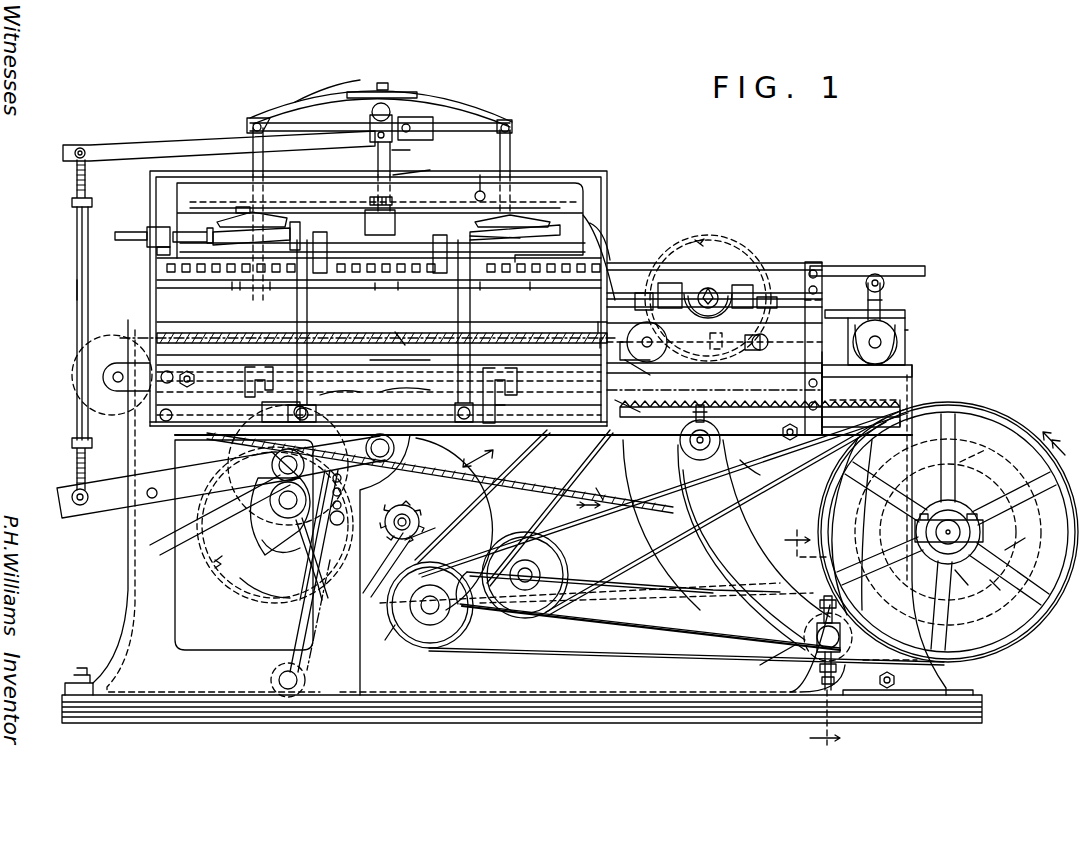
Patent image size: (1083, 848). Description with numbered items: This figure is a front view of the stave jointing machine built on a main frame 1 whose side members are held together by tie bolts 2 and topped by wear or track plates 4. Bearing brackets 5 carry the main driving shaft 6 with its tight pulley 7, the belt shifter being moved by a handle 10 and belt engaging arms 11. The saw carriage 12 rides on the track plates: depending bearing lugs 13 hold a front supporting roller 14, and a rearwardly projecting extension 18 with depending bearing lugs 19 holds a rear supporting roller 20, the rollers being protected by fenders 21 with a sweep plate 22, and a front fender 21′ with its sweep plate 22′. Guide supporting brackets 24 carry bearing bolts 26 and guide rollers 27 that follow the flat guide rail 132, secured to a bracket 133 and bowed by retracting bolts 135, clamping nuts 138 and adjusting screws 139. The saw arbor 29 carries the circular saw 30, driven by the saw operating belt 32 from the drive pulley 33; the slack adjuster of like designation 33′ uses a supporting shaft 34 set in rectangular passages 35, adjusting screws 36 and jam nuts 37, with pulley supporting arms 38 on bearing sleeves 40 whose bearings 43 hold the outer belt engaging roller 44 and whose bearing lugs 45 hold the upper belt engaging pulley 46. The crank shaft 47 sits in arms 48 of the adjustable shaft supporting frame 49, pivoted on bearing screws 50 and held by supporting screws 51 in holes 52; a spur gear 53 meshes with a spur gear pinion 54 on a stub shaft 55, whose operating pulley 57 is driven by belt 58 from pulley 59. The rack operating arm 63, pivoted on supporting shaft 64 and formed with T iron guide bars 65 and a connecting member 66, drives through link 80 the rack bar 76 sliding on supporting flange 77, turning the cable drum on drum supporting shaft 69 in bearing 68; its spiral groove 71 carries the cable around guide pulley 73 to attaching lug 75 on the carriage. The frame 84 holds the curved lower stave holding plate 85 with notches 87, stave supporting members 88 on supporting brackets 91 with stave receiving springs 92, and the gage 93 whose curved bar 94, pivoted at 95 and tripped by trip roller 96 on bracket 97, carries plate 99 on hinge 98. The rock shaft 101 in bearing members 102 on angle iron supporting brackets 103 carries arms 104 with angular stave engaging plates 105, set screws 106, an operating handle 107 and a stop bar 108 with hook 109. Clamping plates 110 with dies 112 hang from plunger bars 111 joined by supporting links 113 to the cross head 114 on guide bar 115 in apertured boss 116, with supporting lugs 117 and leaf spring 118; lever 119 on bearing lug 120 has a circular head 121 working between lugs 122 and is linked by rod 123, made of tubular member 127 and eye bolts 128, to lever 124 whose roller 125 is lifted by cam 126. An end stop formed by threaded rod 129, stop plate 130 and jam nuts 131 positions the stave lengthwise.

The main frame 1 is at (128, 590).
The tie bolts 2 is at (187, 386).
The wear or track plates 4 is at (912, 368).
The bearing brackets 5 is at (985, 532).
The main driving shaft 6 is at (964, 582).
The tight pulley 7 is at (990, 466).
The handle 10 is at (835, 407).
The belt engaging arms 11 is at (975, 468).
The saw carriage 12 is at (868, 285).
The depending bearing lugs 13 is at (640, 368).
The front supporting wheel or roller 14 is at (630, 412).
The attaching lug 75 is at (722, 341).
The rack bar 76 is at (755, 345).
The rearwardly projecting extension 18 is at (905, 312).
The depending bearing lugs 19 is at (896, 332).
The rear supporting roller 20 is at (898, 352).
The fenders 21 is at (910, 330).
The sweep plate 22 is at (956, 345).
The fender 21′ is at (598, 325).
The sweep plate 22′ is at (600, 340).
The guide supporting brackets 24 is at (655, 262).
The bearing bolts 26 is at (668, 340).
The guide rollers 27 is at (668, 283).
The saw arbor or shaft 29 is at (713, 291).
The circular saw 30 is at (715, 238).
The saw operating belt 32 is at (1043, 420).
The drive pulley / slack adjuster 33 is at (1020, 535).
The arm 33′ is at (605, 628).
The supporting shaft 34 is at (818, 660).
The rectangular passages 35 is at (842, 638).
The adjusting screws 36 is at (797, 595).
The jam nuts 37 is at (815, 630).
The pulley supporting arms 38 is at (648, 610).
The bearing sleeves 40 is at (780, 655).
The bearings 43 is at (425, 648).
The outer belt engaging roller 44 is at (440, 628).
The bearing lugs 45 is at (556, 562).
The upper belt engaging pulley 46 is at (540, 572).
The crank shaft 47 is at (255, 525).
The side members or arms 48 is at (265, 525).
The adjustable shaft supporting frame 49 is at (213, 560).
The bearing screws 50 is at (175, 540).
The supporting screws 51 is at (312, 655).
The holes 52 is at (392, 498).
The spur gear 53 is at (250, 580).
The spur gear pinion 54 is at (420, 514).
The stub shaft 55 is at (425, 540).
The operating pulley 57 is at (392, 618).
The belt 58 is at (538, 485).
The pulley 59 is at (1000, 585).
The rack operating arm 63 is at (300, 622).
The supporting shaft 64 is at (279, 680).
The T iron guide bars 65 is at (415, 548).
The connecting member 66 is at (385, 360).
The bearing 68 is at (690, 495).
The drum supporting shaft 69 is at (700, 460).
The spirally arranged groove 71 is at (605, 510).
The guide pulley 73 is at (122, 335).
The supporting flange 77 is at (735, 475).
The link 80 is at (548, 338).
The frame 84 is at (607, 190).
The lower stave holding member or plate 85 is at (392, 244).
The notches 87 is at (442, 236).
The stave supporting members 88 is at (338, 290).
The supporting brackets 91 is at (305, 296).
The stave receiving springs 92 is at (365, 222).
The gage 93 is at (600, 225).
The curved supporting and operating bar 94 is at (918, 266).
The pivot 95 is at (480, 190).
The trip roller 96 is at (884, 283).
The bracket 97 is at (905, 300).
The hinge 98 is at (370, 200).
The plate 99 is at (420, 208).
The rock shaft 101 is at (410, 410).
The bearing members 102 is at (268, 362).
The angle iron supporting brackets 103 is at (247, 383).
The arms 104 is at (318, 362).
The angular stave engaging plates 105 is at (291, 230).
The set screws 106 is at (330, 402).
The operating handle 107 is at (272, 286).
The stop bar 108 is at (420, 290).
The hook 109 is at (484, 290).
The clamping plates 110 is at (250, 212).
The plunger bars 111 is at (250, 130).
The dies 112 is at (225, 222).
The supporting links 113 is at (262, 118).
The cross head 114 is at (430, 100).
The guide bar 115 is at (386, 160).
The apertured boss 116 is at (400, 190).
The supporting lugs 117 is at (372, 138).
The leaf spring 118 is at (352, 92).
The lever 119 is at (150, 148).
The bearing lug 120 is at (300, 103).
The circular head 121 is at (390, 108).
The laterally projecting lugs 122 is at (381, 82).
The adjustable operating rod or link 123 is at (77, 290).
The lever 124 is at (85, 515).
The roller 125 is at (270, 462).
The cam or eccentric 126 is at (280, 590).
The central tubular member 127 is at (77, 330).
The eye bolts 128 is at (77, 170).
The threaded rod or bolt 129 is at (150, 233).
The head or stop plate 130 is at (180, 235).
The jam nuts 131 is at (162, 250).
The flat guide rail 132 is at (840, 248).
The bracket 133 is at (824, 360).
The retracting bolts 135 is at (378, 288).
The clamping nuts 138 is at (238, 295).
The adjusting screws 139 is at (245, 300).